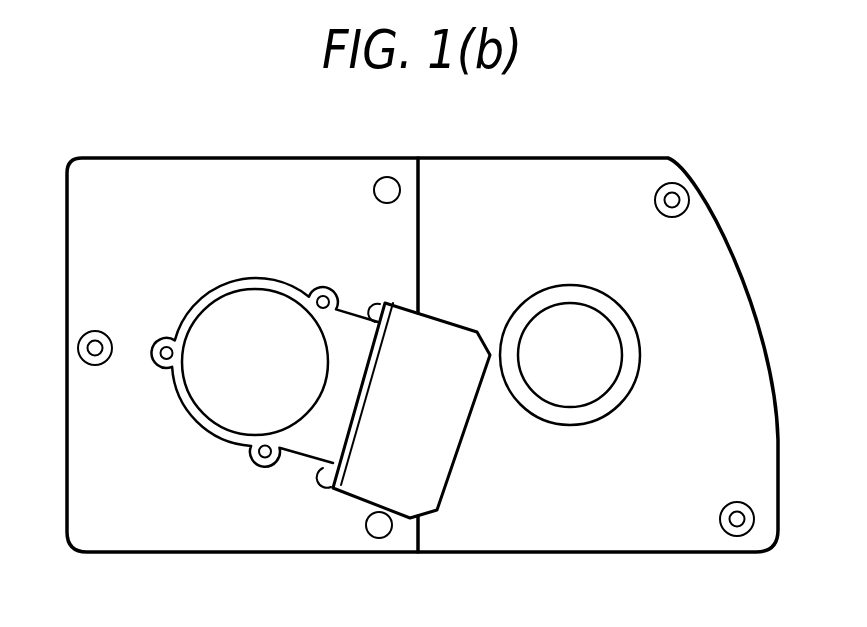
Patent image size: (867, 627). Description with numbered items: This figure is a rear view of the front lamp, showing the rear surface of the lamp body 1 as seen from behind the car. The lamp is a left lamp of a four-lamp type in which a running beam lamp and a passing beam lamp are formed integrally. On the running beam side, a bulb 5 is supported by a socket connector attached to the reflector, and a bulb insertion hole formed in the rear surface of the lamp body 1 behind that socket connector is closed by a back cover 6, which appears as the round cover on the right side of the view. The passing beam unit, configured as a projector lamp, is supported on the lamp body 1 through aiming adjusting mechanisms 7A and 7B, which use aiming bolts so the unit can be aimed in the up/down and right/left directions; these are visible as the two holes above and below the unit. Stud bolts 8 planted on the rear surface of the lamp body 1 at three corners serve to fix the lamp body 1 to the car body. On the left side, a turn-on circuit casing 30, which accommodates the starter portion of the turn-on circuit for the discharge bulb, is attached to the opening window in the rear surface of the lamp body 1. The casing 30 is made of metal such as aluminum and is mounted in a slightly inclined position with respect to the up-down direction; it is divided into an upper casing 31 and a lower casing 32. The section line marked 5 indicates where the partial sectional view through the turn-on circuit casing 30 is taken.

The lamp body 1 is at (655, 520).
The bulb 5 is at (166, 327).
The back cover 6 is at (607, 338).
The aiming adjusting mechanism 7A is at (388, 184).
The aiming adjusting mechanism 7B is at (381, 531).
The stud bolt 8 is at (78, 347).
The turn-on circuit casing 30 is at (232, 466).
The upper casing 31 is at (213, 408).
The lower casing 32 is at (367, 488).